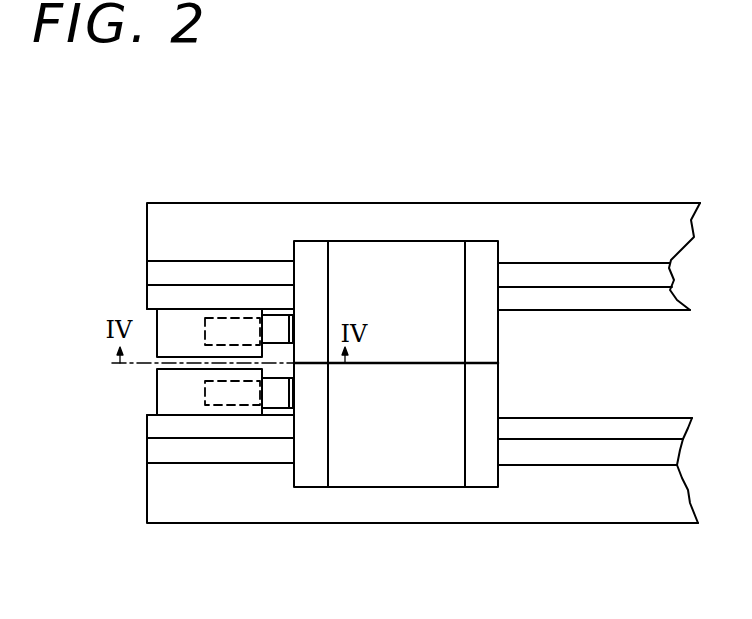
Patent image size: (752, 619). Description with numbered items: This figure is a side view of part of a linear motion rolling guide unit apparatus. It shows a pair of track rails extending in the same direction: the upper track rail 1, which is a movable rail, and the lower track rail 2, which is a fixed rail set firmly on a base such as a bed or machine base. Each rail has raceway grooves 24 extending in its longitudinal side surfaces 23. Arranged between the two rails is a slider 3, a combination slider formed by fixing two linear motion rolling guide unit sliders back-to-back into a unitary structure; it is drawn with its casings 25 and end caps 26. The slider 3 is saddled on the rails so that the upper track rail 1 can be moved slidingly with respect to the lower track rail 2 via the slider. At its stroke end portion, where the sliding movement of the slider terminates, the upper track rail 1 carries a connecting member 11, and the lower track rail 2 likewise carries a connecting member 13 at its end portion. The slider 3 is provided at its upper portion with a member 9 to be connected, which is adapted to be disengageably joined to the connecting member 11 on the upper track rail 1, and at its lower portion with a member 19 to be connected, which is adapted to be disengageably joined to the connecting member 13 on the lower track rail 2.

The upper track rail 1 is at (453, 203).
The lower track rail 2 is at (577, 524).
The slider 3 is at (368, 260).
The member to be connected 9 is at (272, 325).
The connecting member 11 is at (170, 332).
The connecting member 13 is at (175, 393).
The member to be connected 19 is at (277, 398).
The longitudinal side surface 23 is at (620, 240).
The raceway groove 24 is at (630, 280).
The casing 25 is at (407, 314).
The end cap 26 is at (312, 252).